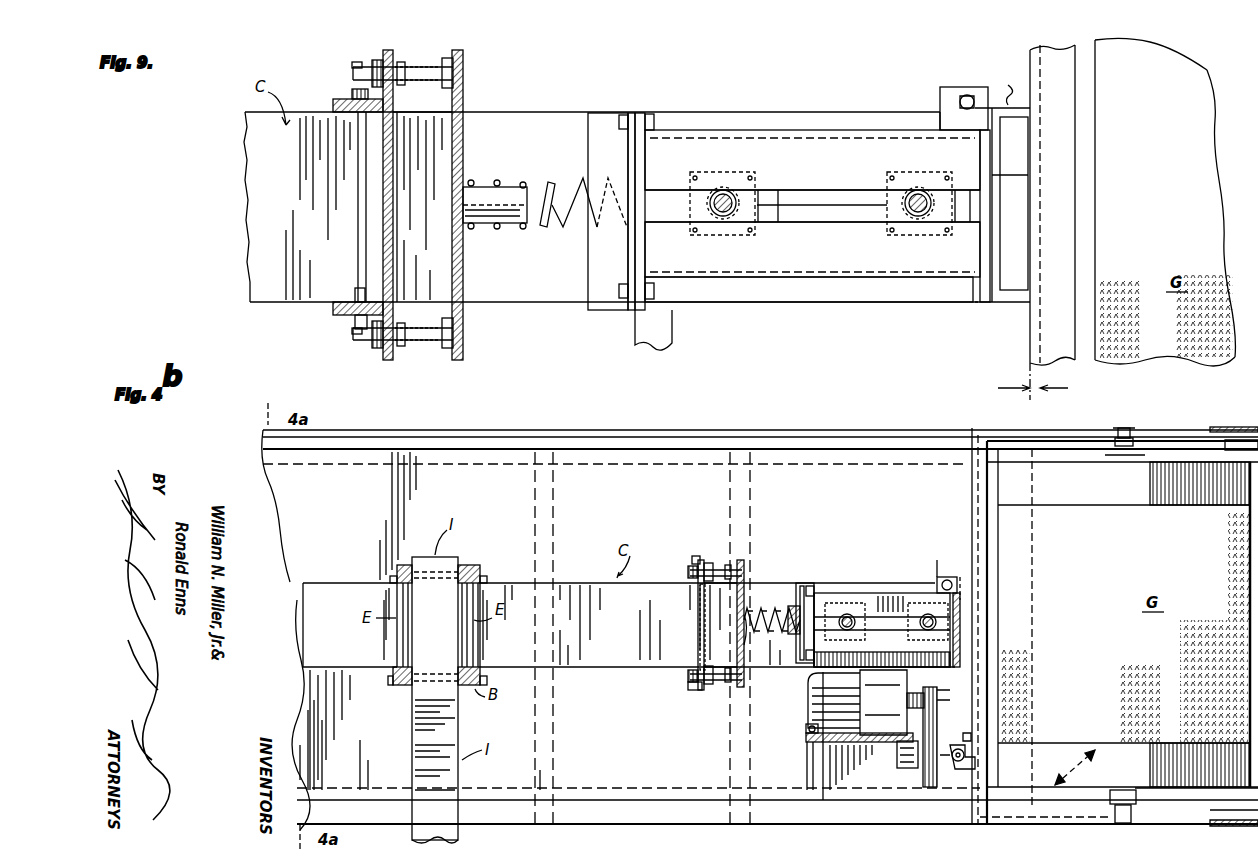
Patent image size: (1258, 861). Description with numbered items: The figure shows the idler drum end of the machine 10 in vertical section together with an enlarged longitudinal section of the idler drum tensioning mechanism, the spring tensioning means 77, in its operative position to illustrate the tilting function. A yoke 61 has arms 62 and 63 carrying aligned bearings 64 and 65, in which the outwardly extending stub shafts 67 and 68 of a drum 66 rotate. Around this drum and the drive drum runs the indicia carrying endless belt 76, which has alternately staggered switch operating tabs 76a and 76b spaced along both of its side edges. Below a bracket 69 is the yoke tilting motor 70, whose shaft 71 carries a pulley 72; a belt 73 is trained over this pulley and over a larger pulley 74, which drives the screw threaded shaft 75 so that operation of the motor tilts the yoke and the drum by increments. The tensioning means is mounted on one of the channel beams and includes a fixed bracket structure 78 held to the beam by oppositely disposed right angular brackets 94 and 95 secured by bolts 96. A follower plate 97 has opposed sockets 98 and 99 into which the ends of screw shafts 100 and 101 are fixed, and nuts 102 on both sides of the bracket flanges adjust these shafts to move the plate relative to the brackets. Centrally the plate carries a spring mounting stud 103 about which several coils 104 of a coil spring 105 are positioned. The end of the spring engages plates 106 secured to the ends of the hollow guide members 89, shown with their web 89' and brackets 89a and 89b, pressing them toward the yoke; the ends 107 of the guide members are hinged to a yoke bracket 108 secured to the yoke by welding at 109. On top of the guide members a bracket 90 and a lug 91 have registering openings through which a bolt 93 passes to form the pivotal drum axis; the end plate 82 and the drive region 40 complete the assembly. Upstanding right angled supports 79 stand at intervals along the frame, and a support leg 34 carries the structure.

In FIG. 4B, the machine 10 is at (951, 731).
In FIG. 9, the support leg 34 is at (673, 340).
In FIG. 4B, the support leg 34 is at (811, 665).
In FIG. 4B, the drive assembly 40 is at (955, 560).
In FIG. 9, the yoke 61 is at (1026, 347).
In FIG. 4B, the yoke 61 is at (985, 826).
In FIG. 4B, the arm 62 is at (990, 427).
In FIG. 4B, the arm 63 is at (1070, 815).
In FIG. 4B, the bearing 64 is at (1133, 822).
In FIG. 4B, the bearing 65 is at (1131, 430).
In FIG. 9, the drum 66 is at (1207, 70).
In FIG. 4B, the drum 66 is at (1150, 494).
In FIG. 4B, the stub shaft 67 is at (1150, 450).
In FIG. 4B, the stub shaft 68 is at (1137, 782).
In FIG. 9, the bracket 69 is at (1000, 306).
In FIG. 4B, the bracket 69 is at (986, 650).
In FIG. 4B, the yoke tilting motor 70 is at (885, 740).
In FIG. 4B, the shaft 71 is at (918, 668).
In FIG. 4B, the pulley 72 is at (940, 693).
In FIG. 4B, the belt 73 is at (932, 720).
In FIG. 4B, the larger pulley 74 is at (920, 776).
In FIG. 4B, the screw threaded shaft 75 is at (955, 770).
In FIG. 4B, the indicia carrying endless belt 76 is at (1250, 618).
In FIG. 4B, the switch operating tab 76a is at (425, 450).
In FIG. 4B, the switch operating tab 76b is at (690, 789).
In FIG. 9, the adjustable spring tensioning means 77 is at (558, 310).
In FIG. 4B, the adjustable spring tensioning means 77 is at (754, 585).
In FIG. 9, the fixed bracket structure 78 is at (473, 84).
In FIG. 4B, the fixed bracket structure 78 is at (737, 557).
In FIG. 4B, the upstanding right angled support 79 is at (554, 732).
In FIG. 9, the end plate 82 is at (990, 240).
In FIG. 9, the hollow guide member 89 is at (812, 209).
In FIG. 9, the rail bracket 89a is at (728, 215).
In FIG. 9, the rail bracket 89b is at (918, 184).
In FIG. 9, the rail web 89' is at (822, 228).
In FIG. 9, the bracket 90 is at (940, 85).
In FIG. 4B, the bracket 90 is at (936, 577).
In FIG. 9, the lug 91 is at (955, 114).
In FIG. 4B, the lug 91 is at (942, 552).
In FIG. 9, the bolt 93 is at (968, 95).
In FIG. 4B, the bolt 93 is at (947, 580).
In FIG. 9, the right angular bracket 94 is at (388, 54).
In FIG. 4B, the right angular bracket 94 is at (697, 598).
In FIG. 9, the right angular bracket 95 is at (398, 354).
In FIG. 4B, the right angular bracket 95 is at (704, 690).
In FIG. 9, the bolt 96 is at (358, 162).
In FIG. 4B, the bolt 96 is at (697, 638).
In FIG. 9, the follower plate 97 is at (463, 102).
In FIG. 4B, the follower plate 97 is at (734, 687).
In FIG. 9, the socket 98 is at (463, 58).
In FIG. 9, the socket 99 is at (458, 310).
In FIG. 9, the screw shaft 100 is at (425, 302).
In FIG. 4B, the screw shaft 100 is at (698, 684).
In FIG. 9, the screw shaft 101 is at (412, 90).
In FIG. 4B, the screw shaft 101 is at (698, 557).
In FIG. 9, the nut 102 is at (363, 64).
In FIG. 4B, the nut 102 is at (705, 563).
In FIG. 9, the spring mounting stud 103 is at (501, 218).
In FIG. 4B, the spring mounting stud 103 is at (752, 655).
In FIG. 9, the coil 104 is at (498, 182).
In FIG. 9, the coil spring 105 is at (553, 176).
In FIG. 4B, the coil spring 105 is at (799, 604).
In FIG. 9, the plate 106 is at (635, 160).
In FIG. 4B, the plate 106 is at (810, 584).
In FIG. 9, the guide member end 107 is at (985, 180).
In FIG. 4B, the guide member end 107 is at (987, 625).
In FIG. 9, the yoke bracket 108 is at (1006, 81).
In FIG. 9, the weld 109 is at (1015, 94).
In FIG. 4B, the weld 109 is at (975, 560).